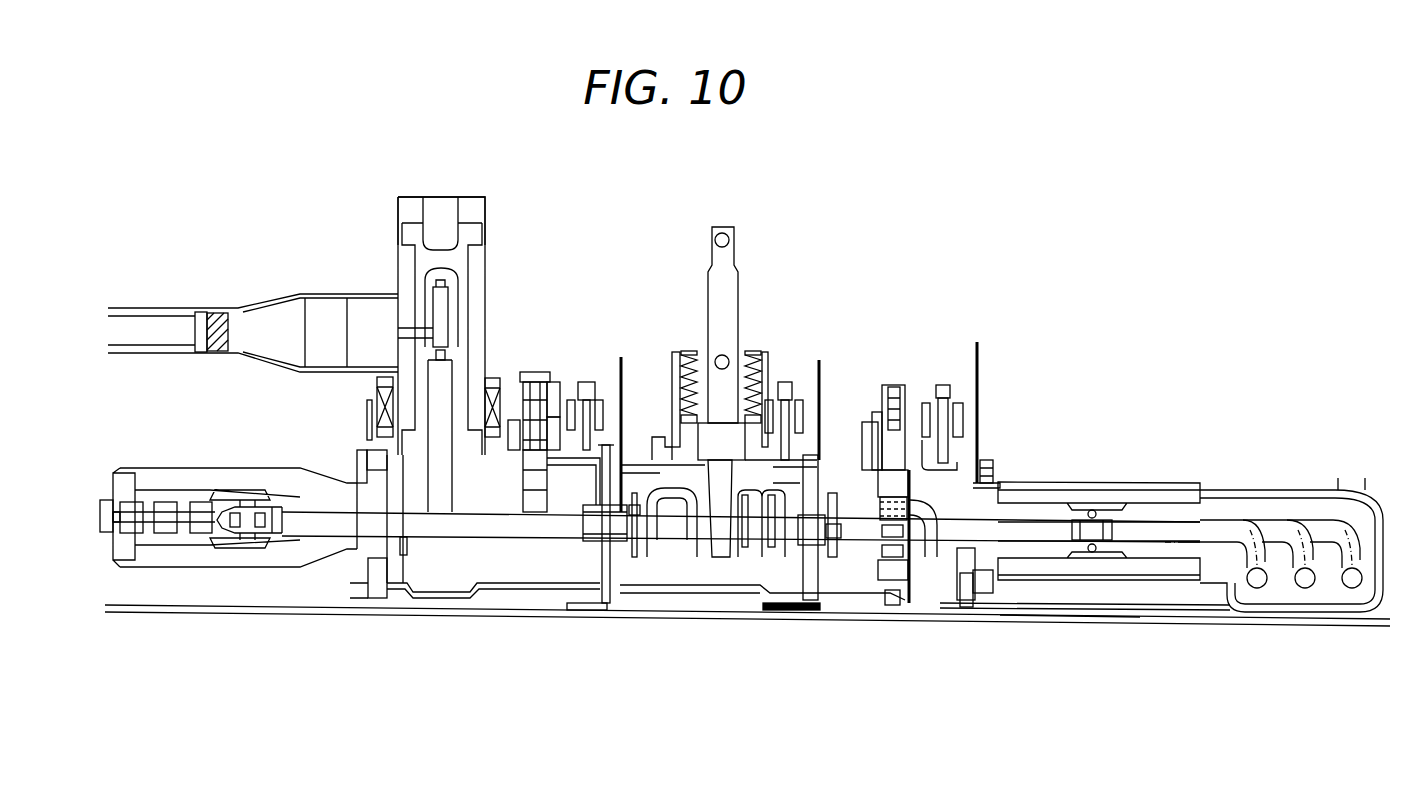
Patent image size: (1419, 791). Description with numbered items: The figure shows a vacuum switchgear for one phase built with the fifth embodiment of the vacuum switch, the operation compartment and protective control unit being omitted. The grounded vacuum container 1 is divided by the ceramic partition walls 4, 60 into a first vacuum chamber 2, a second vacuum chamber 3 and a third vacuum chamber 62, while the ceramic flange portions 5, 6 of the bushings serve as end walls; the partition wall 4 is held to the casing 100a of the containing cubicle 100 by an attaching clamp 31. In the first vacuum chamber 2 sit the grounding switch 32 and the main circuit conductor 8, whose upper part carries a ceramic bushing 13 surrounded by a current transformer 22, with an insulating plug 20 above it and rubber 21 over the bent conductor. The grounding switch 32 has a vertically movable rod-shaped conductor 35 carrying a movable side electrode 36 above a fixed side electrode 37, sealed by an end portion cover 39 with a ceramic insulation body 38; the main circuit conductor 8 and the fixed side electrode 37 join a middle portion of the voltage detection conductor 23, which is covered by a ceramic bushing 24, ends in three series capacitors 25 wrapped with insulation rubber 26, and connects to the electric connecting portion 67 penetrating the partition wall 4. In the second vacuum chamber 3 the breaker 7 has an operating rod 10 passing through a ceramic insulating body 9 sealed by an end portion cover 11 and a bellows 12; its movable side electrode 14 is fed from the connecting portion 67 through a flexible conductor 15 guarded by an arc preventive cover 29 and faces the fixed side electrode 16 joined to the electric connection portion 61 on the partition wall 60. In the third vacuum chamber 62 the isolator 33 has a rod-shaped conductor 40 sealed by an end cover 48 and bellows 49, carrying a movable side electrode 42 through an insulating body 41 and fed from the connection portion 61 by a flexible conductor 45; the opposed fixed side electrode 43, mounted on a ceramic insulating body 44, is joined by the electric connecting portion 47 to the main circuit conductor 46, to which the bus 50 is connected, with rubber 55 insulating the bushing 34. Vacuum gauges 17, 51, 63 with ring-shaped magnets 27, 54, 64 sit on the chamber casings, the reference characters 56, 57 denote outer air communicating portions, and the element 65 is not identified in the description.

The vacuum container 1 is at (513, 592).
The first vacuum chamber 2 is at (528, 553).
The second vacuum chamber 3 is at (715, 567).
The partition wall 4 is at (610, 593).
The flange portion 5 is at (383, 600).
The flange portion 6 is at (963, 597).
The breaker 7 is at (717, 572).
The main circuit conductor 8 is at (405, 322).
The insulating body 9 is at (720, 443).
The operating rod 10 is at (718, 267).
The end portion cover 11 is at (673, 352).
The bellows 12 is at (700, 353).
The bushing 13 is at (378, 380).
The movable side electrode 14 is at (753, 540).
The flexible conductor 15 is at (633, 572).
The fixed side electrode 16 is at (787, 595).
The vacuum gauge 17 is at (589, 423).
The insulating plug 20 is at (418, 253).
The rubber 21 is at (292, 350).
The current transformer 22 is at (483, 412).
The voltage detection conductor 23 is at (310, 527).
The bushing 24 is at (343, 543).
The capacitors 25 is at (193, 505).
The insulation rubber 26 is at (285, 490).
The magnet 27 is at (569, 400).
The arc preventive cover 29 is at (687, 550).
The attaching clamp 31 is at (573, 613).
The grounding switch 32 is at (545, 377).
The isolator 33 is at (912, 387).
The bushing 34 is at (1004, 582).
The rod-shaped conductor 35 is at (523, 372).
The movable side electrode 36 is at (517, 472).
The fixed side electrode 37 is at (520, 492).
The insulation body 38 is at (553, 420).
The end portion cover 39 is at (513, 420).
The rod-shaped conductor 40 is at (557, 417).
The insulating body 41 is at (910, 488).
The movable side electrode 42 is at (940, 493).
The fixed side electrode 43 is at (1037, 530).
The insulating body 44 is at (897, 603).
The flexible conductor 45 is at (860, 567).
The main circuit conductor 46 is at (1087, 483).
The electric connecting portion 47 is at (922, 608).
The end cover 48 is at (863, 427).
The bellows 49 is at (878, 417).
The main circuit conductor 50 is at (1353, 595).
The vacuum gauge 51 is at (783, 400).
The magnet 54 is at (770, 400).
The rubber 55 is at (1155, 567).
The outer air communicating portion 56 is at (1122, 597).
The outer air communicating portion 57 is at (360, 590).
The partition wall 60 is at (812, 593).
The electric connection portion 61 is at (842, 512).
The third vacuum chamber 62 is at (887, 557).
The vacuum gauge 63 is at (948, 387).
The magnet 64 is at (927, 403).
The shaft hub 65 is at (805, 527).
The electric connecting portion 67 is at (628, 598).
The containing cubicle 100 is at (135, 612).
The casing 100a is at (1067, 626).